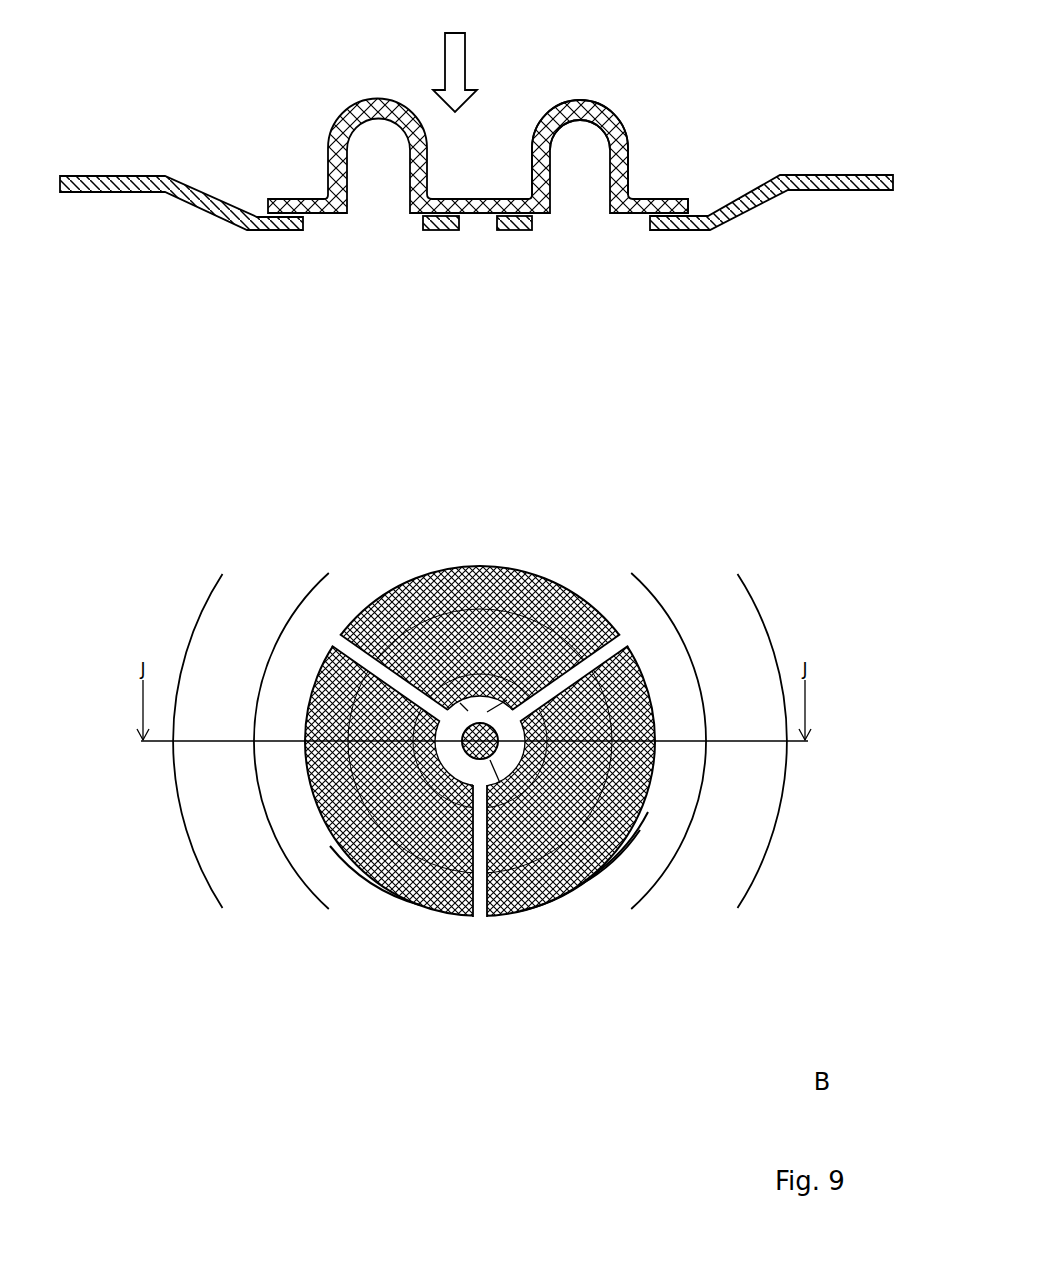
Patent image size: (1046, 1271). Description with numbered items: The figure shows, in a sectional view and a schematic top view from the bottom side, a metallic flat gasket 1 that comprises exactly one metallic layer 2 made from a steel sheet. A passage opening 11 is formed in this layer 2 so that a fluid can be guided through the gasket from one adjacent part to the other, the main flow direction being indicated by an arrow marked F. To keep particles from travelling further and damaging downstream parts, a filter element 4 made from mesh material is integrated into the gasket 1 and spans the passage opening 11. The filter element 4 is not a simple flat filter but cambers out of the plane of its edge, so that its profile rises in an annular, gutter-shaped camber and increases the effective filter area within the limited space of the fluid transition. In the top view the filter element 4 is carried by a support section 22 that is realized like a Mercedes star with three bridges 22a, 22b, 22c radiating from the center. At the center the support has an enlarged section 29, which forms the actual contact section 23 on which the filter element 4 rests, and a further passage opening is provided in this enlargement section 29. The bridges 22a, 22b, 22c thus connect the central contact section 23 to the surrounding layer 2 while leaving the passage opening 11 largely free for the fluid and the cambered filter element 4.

The metallic flat gasket 1 is at (177, 78).
The metallic layer 2 is at (683, 228).
The support section 22 is at (518, 222).
The bridge 22a is at (477, 868).
The bridge 22b is at (373, 657).
The bridge 22c is at (590, 657).
The contact section 23 is at (487, 708).
The enlarged section 29 is at (383, 605).
The filter element 4 is at (408, 192).
The passage opening 11 is at (591, 234).